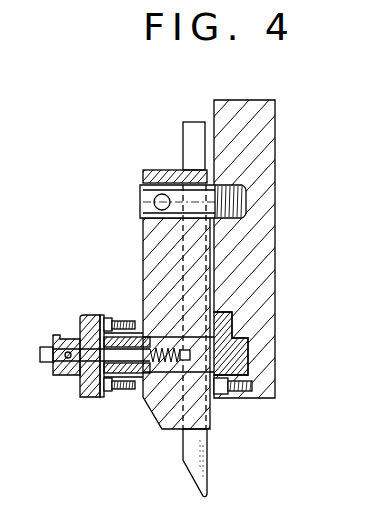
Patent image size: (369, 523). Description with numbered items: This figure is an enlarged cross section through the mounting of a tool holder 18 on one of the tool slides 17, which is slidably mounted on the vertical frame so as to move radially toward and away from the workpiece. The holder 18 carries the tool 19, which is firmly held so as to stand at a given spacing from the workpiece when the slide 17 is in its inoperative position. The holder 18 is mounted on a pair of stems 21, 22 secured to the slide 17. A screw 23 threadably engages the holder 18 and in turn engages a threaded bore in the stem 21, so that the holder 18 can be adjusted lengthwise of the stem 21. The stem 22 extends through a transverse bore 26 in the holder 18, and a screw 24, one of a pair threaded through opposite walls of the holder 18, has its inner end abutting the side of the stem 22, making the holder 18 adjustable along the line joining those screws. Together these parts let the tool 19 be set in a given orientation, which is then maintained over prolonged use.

The tool slide 17 is at (262, 247).
The tool holder 18 is at (140, 302).
The tool 19 is at (188, 461).
The stem 21 is at (248, 352).
The stem 22 is at (141, 210).
The screw 23 is at (45, 348).
The screw 24 is at (154, 201).
The transverse bore 26 is at (143, 182).